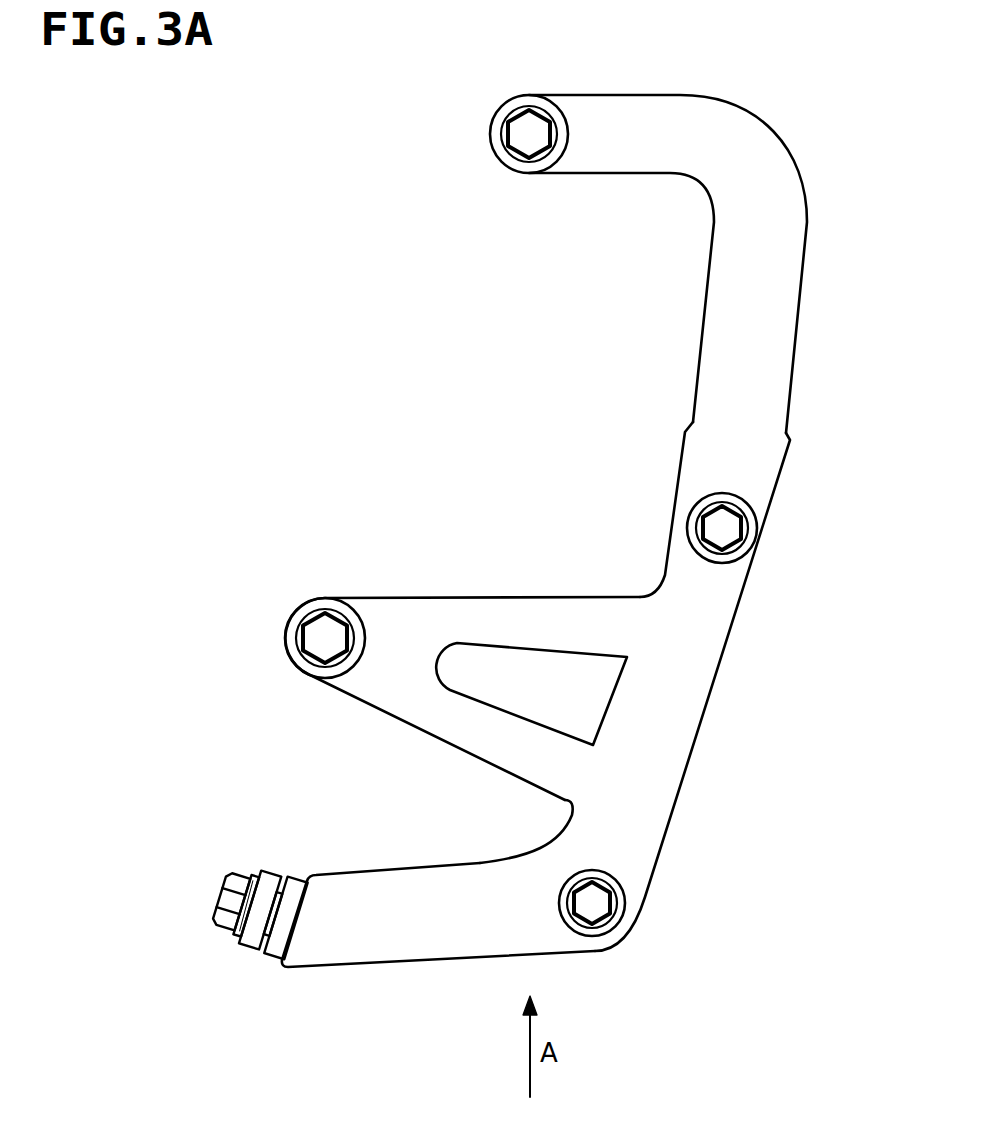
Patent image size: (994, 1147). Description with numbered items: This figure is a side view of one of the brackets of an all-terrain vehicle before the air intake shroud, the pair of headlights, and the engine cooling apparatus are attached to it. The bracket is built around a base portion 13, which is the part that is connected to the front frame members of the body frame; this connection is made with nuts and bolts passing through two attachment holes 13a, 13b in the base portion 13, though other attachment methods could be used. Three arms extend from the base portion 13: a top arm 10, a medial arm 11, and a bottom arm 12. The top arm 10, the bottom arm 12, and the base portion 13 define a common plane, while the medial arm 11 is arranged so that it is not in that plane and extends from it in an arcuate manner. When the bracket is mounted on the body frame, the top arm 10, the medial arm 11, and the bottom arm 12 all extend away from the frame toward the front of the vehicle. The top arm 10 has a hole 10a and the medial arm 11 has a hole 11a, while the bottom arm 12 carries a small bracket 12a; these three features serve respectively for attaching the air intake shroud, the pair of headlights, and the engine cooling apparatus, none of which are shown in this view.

The top arm 10 is at (750, 145).
The hole 10a is at (529, 137).
The medial arm 11 is at (402, 615).
The hole 11a is at (326, 637).
The bottom arm 12 is at (390, 937).
The bracket 12a is at (268, 873).
The base portion 13 is at (688, 693).
The attachment hole 13a is at (727, 525).
The attachment hole 13b is at (592, 903).